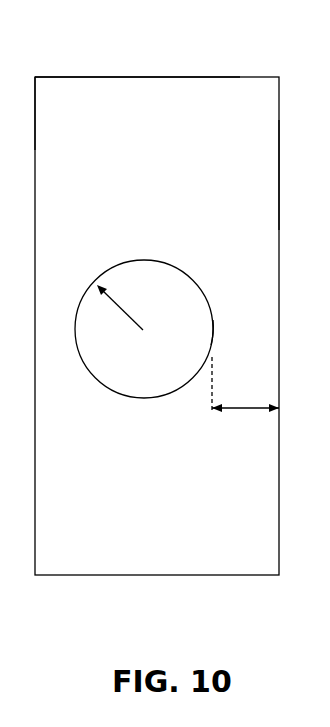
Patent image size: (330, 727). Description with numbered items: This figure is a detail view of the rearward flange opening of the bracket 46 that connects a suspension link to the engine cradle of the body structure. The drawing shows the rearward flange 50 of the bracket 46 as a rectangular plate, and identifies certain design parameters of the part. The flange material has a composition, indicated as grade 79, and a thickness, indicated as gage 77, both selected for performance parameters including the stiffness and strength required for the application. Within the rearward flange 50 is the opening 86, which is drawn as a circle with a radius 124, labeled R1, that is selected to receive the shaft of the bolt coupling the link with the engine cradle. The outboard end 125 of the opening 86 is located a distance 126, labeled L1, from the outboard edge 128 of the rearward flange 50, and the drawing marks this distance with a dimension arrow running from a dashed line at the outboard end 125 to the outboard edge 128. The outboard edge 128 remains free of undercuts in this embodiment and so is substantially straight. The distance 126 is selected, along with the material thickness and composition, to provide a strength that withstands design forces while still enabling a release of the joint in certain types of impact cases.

The bracket 46 is at (47, 72).
The rearward flange 50 is at (94, 524).
The gage 77 is at (200, 77).
The grade 79 is at (147, 77).
The opening 86 is at (132, 399).
The radius 124 is at (122, 302).
The outboard end 125 is at (213, 330).
The distance 126 is at (243, 410).
The outboard edge 128 is at (279, 175).